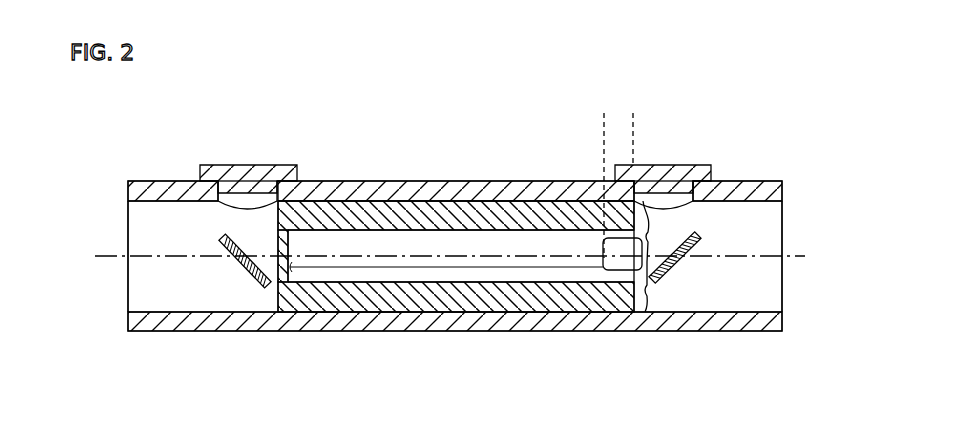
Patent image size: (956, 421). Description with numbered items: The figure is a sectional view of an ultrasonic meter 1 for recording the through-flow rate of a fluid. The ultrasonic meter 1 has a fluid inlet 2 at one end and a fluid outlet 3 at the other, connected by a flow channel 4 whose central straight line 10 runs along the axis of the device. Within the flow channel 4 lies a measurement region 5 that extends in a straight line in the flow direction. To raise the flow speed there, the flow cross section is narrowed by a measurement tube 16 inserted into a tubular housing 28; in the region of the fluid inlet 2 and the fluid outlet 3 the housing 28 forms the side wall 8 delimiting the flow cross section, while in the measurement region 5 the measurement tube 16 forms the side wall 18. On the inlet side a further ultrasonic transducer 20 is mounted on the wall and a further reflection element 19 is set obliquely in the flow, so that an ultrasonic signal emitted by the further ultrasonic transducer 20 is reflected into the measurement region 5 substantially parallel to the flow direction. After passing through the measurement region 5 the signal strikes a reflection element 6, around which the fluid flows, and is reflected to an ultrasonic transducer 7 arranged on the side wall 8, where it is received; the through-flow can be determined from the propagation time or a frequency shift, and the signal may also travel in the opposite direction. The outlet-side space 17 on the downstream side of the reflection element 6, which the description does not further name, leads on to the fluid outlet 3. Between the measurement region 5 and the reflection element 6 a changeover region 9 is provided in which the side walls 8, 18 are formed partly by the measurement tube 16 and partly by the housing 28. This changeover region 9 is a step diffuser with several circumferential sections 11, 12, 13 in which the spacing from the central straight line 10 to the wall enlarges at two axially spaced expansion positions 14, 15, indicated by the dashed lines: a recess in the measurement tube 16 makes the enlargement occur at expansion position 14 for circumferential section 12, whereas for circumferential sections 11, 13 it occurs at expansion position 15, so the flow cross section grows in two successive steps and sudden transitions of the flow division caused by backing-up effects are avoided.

The ultrasonic meter 1 is at (452, 138).
The fluid inlet 2 is at (122, 228).
The fluid outlet 3 is at (786, 225).
The flow channel 4 is at (380, 248).
The measurement region 5 is at (443, 268).
The reflection element 6 is at (698, 241).
The ultrasonic transducer 7 is at (674, 176).
The side wall 8 is at (731, 206).
The changeover region 9 is at (622, 264).
The central straight line 10 is at (487, 253).
The circumferential section 11 is at (660, 208).
The circumferential section 12 is at (649, 260).
The circumferential section 13 is at (655, 280).
The expansion position 14 is at (599, 171).
The expansion position 15 is at (632, 125).
The measurement tube 16 is at (494, 293).
The second cavity 17 is at (737, 272).
The side wall 18 is at (322, 234).
The further reflection element 19 is at (250, 278).
The further ultrasonic transducer 20 is at (261, 178).
The housing 28 is at (330, 192).